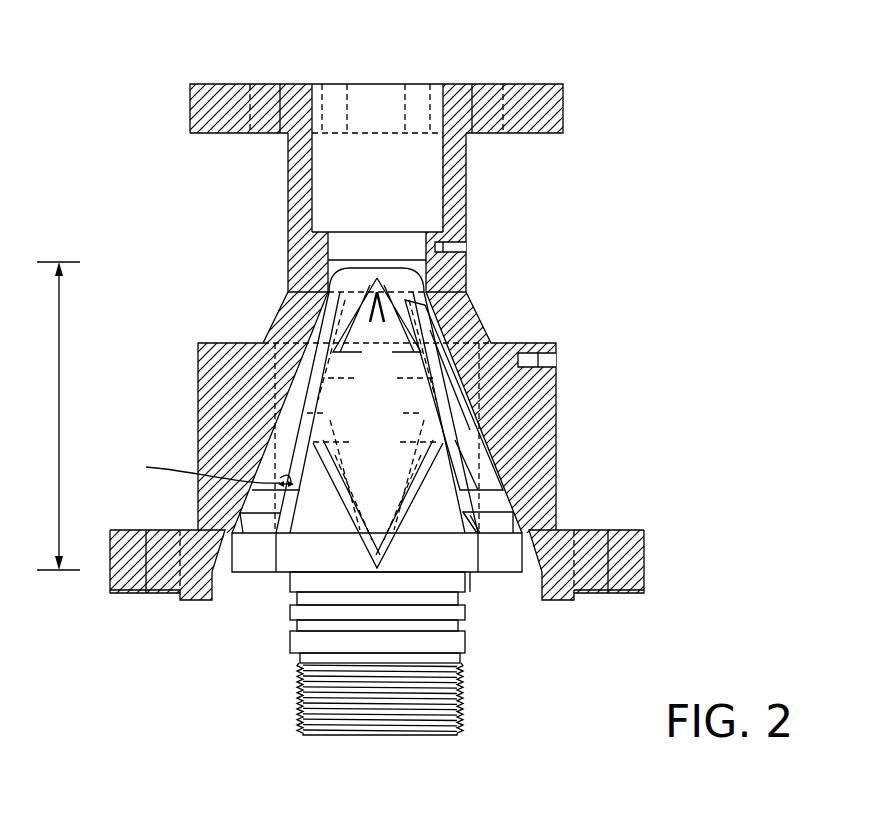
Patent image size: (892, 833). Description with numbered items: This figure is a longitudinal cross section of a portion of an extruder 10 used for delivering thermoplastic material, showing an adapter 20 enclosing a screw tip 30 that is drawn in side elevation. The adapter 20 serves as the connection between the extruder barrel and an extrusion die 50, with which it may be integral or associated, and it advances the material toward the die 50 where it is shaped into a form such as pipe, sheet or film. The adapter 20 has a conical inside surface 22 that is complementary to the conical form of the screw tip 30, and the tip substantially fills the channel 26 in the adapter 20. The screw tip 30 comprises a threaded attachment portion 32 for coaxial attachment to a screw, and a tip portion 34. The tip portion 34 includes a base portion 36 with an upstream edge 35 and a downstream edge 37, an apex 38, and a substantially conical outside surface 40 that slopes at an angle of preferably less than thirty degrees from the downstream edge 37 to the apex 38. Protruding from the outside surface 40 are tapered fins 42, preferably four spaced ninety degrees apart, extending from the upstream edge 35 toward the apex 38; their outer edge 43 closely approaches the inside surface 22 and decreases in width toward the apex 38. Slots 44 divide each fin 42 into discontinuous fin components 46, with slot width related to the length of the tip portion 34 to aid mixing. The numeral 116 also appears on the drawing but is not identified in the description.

The extruder 10 is at (77, 28).
The adapter 20 is at (522, 296).
The conical inside surface 22 is at (465, 425).
The channel 26 is at (457, 388).
The screw tip 30 is at (498, 550).
The attachment portion 32 is at (297, 668).
The tip portion 34 is at (392, 429).
The upstream edge 35 is at (487, 590).
The base portion 36 is at (258, 556).
The downstream edge 37 is at (495, 522).
The apex 38 is at (375, 270).
The conical outside surface 40 is at (440, 510).
The fins 42 is at (343, 308).
The outer edge 43 is at (447, 312).
The slots 44 is at (325, 420).
The fin components 46 is at (398, 300).
The extrusion die 50 is at (582, 98).
The vane edge 116 is at (470, 472).